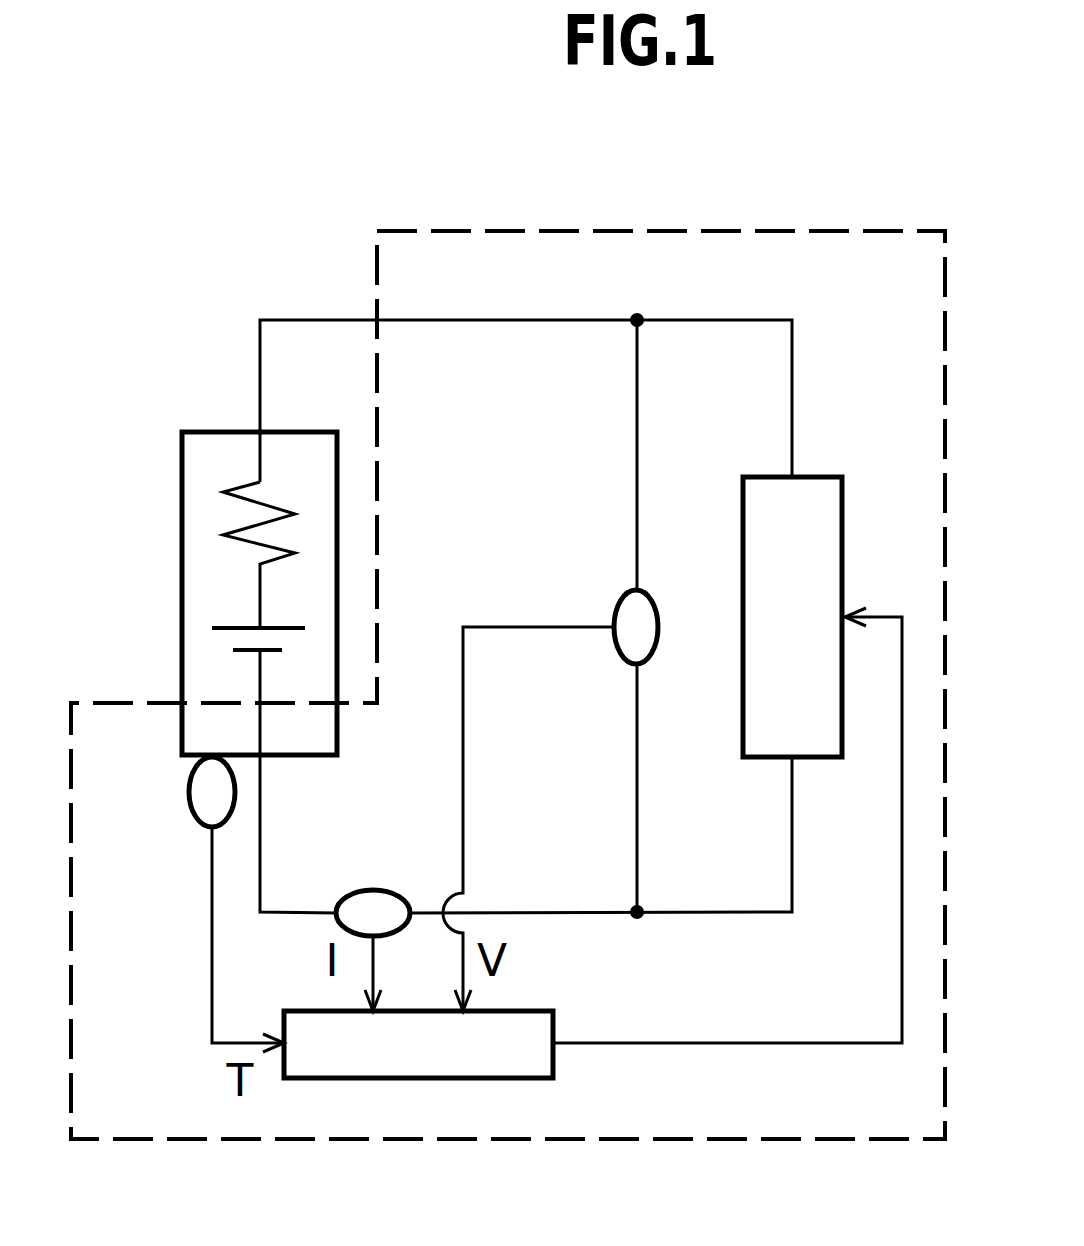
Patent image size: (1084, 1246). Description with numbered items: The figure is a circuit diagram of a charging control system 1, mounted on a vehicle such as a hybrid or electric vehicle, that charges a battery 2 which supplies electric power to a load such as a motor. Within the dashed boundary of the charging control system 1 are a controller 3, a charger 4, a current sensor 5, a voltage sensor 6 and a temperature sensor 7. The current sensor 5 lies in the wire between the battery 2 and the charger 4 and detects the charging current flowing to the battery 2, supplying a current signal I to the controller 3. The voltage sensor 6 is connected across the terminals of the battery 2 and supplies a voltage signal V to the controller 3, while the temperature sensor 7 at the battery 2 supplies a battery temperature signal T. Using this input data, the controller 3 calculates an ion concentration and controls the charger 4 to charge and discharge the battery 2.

The charging control system 1 is at (748, 231).
The battery 2 is at (182, 527).
The controller 3 is at (524, 1011).
The charger 4 is at (845, 527).
The current sensor 5 is at (373, 890).
The voltage sensor 6 is at (659, 630).
The temperature sensor 7 is at (196, 812).